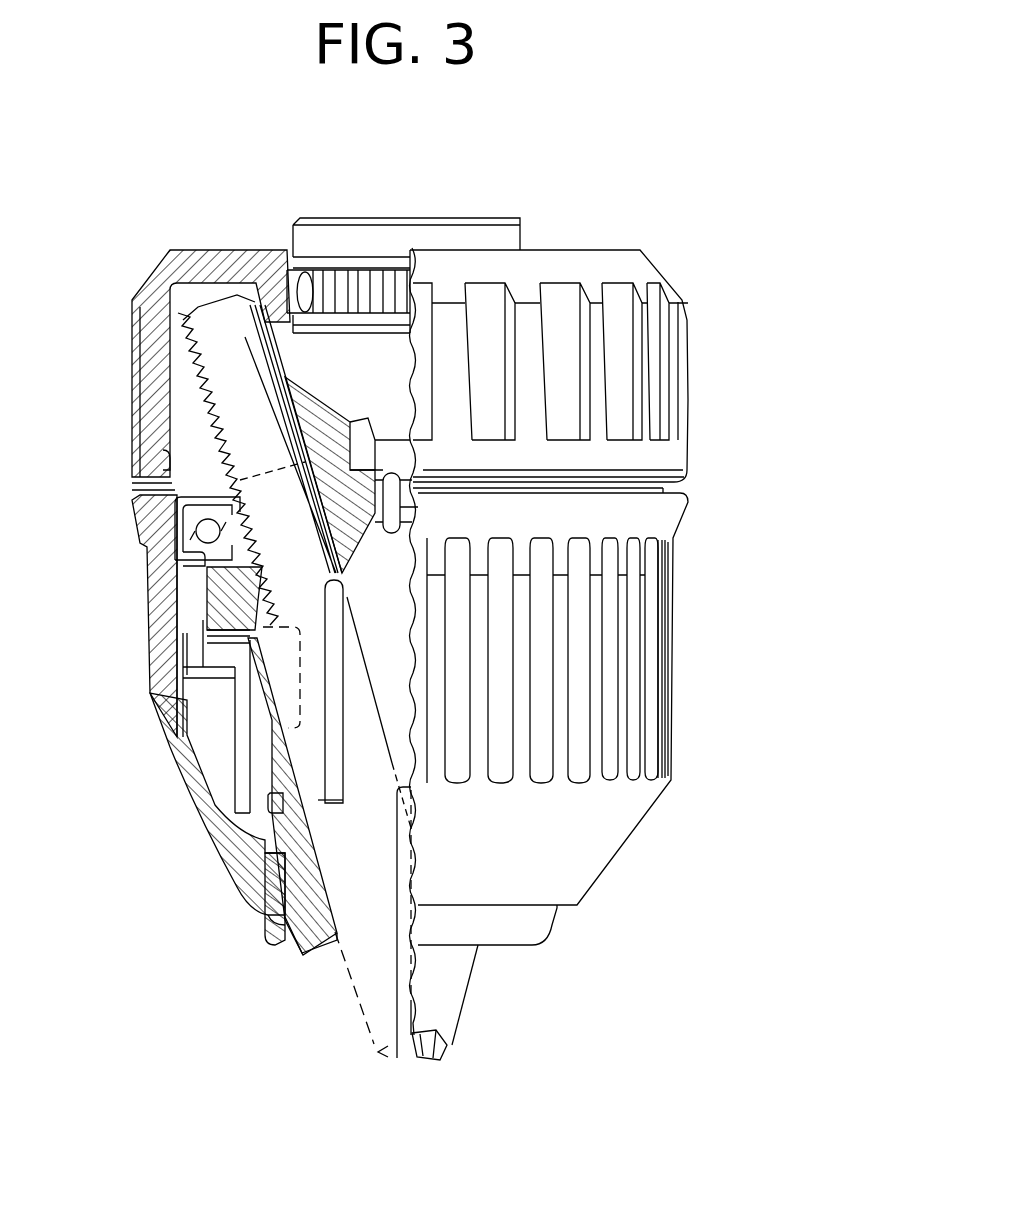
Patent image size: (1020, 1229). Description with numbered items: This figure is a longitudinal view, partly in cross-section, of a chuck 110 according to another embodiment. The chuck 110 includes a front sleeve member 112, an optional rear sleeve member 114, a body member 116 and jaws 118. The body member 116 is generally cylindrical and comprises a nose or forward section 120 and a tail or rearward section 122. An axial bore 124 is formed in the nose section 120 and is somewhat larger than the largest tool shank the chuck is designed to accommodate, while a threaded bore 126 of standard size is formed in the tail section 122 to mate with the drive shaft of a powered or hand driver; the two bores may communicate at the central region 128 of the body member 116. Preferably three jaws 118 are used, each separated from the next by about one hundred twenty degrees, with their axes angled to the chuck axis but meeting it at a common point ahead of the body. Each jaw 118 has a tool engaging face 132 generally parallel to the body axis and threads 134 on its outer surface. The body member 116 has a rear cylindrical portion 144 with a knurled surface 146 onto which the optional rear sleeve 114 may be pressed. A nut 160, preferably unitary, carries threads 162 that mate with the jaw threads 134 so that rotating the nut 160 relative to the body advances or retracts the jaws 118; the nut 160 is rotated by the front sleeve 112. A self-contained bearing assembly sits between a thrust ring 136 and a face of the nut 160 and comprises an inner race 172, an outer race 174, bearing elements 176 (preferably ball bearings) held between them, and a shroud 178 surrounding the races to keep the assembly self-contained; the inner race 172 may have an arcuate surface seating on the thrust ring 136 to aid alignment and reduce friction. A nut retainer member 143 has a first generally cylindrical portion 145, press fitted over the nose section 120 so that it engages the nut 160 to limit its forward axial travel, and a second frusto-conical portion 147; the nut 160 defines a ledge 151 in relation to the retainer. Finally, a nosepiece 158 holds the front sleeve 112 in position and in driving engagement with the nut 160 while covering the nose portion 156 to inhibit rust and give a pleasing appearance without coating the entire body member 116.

The chuck 110 is at (760, 453).
The front sleeve member 112 is at (604, 866).
The rear sleeve member 114 is at (640, 268).
The body member 116 is at (270, 828).
The jaws 118 is at (250, 365).
The nose or forward section 120 is at (300, 898).
The tail or rearward section 122 is at (287, 250).
The axial bore 124 is at (343, 913).
The threaded bore 126 is at (483, 213).
The central region 128 is at (417, 507).
The tool engaging face 132 is at (422, 1063).
The threads 134 is at (213, 405).
The thrust ring 136 is at (215, 495).
The nut retainer member 143 is at (268, 720).
The rear cylindrical portion 144 is at (342, 235).
The first generally cylindrical portion 145 is at (278, 793).
The knurled surface 146 is at (325, 283).
The second frusto-conical portion 147 is at (262, 690).
The ledge 151 is at (265, 640).
The nose portion 156 is at (290, 880).
The nosepiece 158 is at (303, 953).
The nut 160 is at (215, 615).
The threads 162 is at (268, 588).
The inner race 172 is at (222, 520).
The outer race 174 is at (190, 545).
The bearing elements 176 is at (230, 545).
The shroud 178 is at (215, 598).